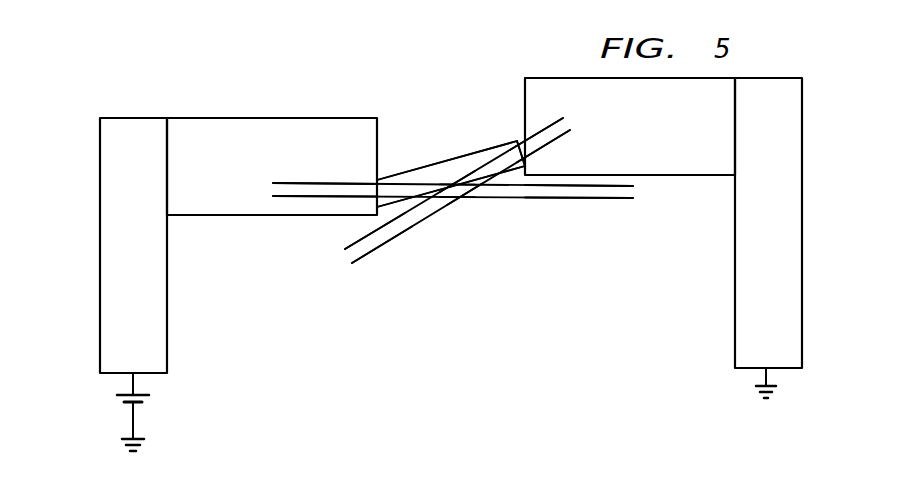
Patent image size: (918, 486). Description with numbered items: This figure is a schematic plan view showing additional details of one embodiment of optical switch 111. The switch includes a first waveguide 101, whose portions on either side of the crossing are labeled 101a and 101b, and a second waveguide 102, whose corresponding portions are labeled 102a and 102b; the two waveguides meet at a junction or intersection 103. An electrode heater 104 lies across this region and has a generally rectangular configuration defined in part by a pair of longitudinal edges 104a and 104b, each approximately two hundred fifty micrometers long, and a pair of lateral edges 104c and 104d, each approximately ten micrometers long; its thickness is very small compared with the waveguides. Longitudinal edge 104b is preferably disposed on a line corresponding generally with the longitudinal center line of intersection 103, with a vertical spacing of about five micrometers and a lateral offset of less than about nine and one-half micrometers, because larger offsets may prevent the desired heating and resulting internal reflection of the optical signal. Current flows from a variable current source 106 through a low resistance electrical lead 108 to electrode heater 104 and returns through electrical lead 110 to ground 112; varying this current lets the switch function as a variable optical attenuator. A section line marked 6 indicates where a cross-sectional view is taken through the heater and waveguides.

The section line for FIG. 6 is at (397, 60).
The first waveguide 101 is at (569, 210).
The input portion of first waveguide 101a is at (298, 191).
The output portion of first waveguide 101b is at (622, 192).
The second waveguide 102 is at (429, 232).
The input portion of second waveguide 102a is at (346, 257).
The output portion of second waveguide 102b is at (567, 121).
The junction or intersection 103 is at (461, 201).
The electrode heater 104 is at (465, 136).
The longitudinal edge 104a is at (428, 166).
The longitudinal edge 104b is at (509, 172).
The lateral edge 104c is at (520, 139).
The lateral edge 104d is at (380, 210).
The variable current source 106 is at (117, 398).
The electrical lead 108 is at (104, 258).
The electrical lead 110 is at (796, 239).
The optical switch 111 is at (211, 94).
The ground 112 is at (122, 446).